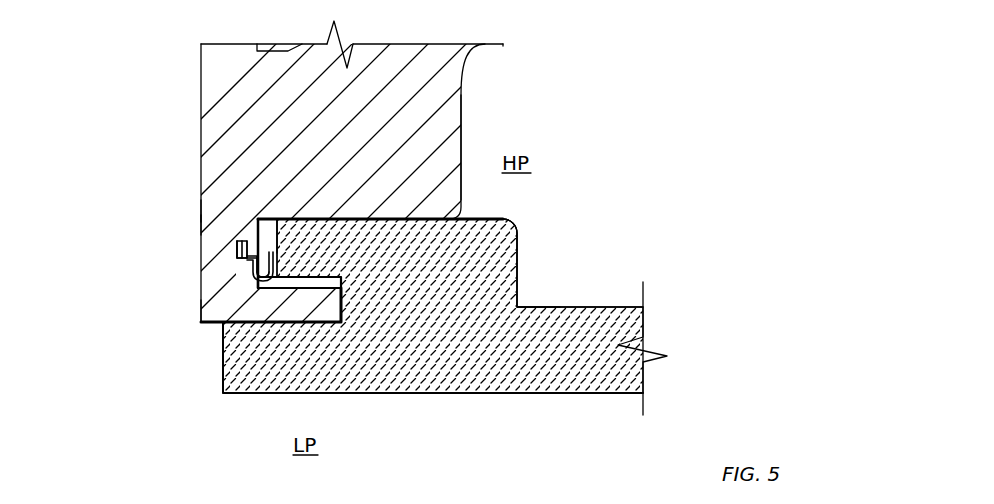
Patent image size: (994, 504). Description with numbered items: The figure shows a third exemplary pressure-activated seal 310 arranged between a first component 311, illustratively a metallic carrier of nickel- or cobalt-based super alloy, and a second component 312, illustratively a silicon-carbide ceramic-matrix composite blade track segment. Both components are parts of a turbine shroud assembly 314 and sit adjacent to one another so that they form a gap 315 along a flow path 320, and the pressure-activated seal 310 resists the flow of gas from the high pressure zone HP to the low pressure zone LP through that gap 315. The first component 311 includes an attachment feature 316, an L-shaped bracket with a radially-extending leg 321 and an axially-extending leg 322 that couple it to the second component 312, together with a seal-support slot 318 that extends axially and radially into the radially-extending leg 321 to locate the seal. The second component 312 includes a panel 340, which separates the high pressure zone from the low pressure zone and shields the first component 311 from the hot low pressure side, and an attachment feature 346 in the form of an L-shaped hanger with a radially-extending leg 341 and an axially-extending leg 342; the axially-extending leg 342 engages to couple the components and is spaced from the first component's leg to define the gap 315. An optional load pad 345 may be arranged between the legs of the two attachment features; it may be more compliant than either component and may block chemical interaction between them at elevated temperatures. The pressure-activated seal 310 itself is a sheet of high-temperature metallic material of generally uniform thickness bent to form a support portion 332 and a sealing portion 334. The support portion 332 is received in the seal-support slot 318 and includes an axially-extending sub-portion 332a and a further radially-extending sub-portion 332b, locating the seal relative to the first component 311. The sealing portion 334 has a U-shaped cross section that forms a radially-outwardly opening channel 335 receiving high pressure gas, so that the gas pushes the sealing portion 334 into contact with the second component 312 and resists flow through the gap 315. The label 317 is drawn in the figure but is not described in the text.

The pressure-activated seal 310 is at (146, 339).
The first component 311 is at (200, 103).
The second component 312 is at (488, 403).
The turbine shroud assembly 314 is at (634, 90).
The gap 315 is at (268, 236).
The attachment feature 316 is at (218, 211).
The first body 317 is at (399, 118).
The seal-support slot 318 is at (237, 261).
The flow path 320 is at (462, 216).
The radially-extending leg 321 is at (218, 221).
The axially-extending leg 322 is at (279, 302).
The support portion 332 is at (240, 271).
The axially-extending sub-portion 332a is at (250, 240).
The second leg 332b is at (235, 240).
The sealing portion 334 is at (268, 290).
The channel 335 is at (269, 256).
The panel 340 is at (368, 374).
The radially-extending leg 341 is at (484, 293).
The axially-extending leg 342 is at (330, 217).
The load pad 345 is at (329, 274).
The attachment feature 346 is at (524, 256).